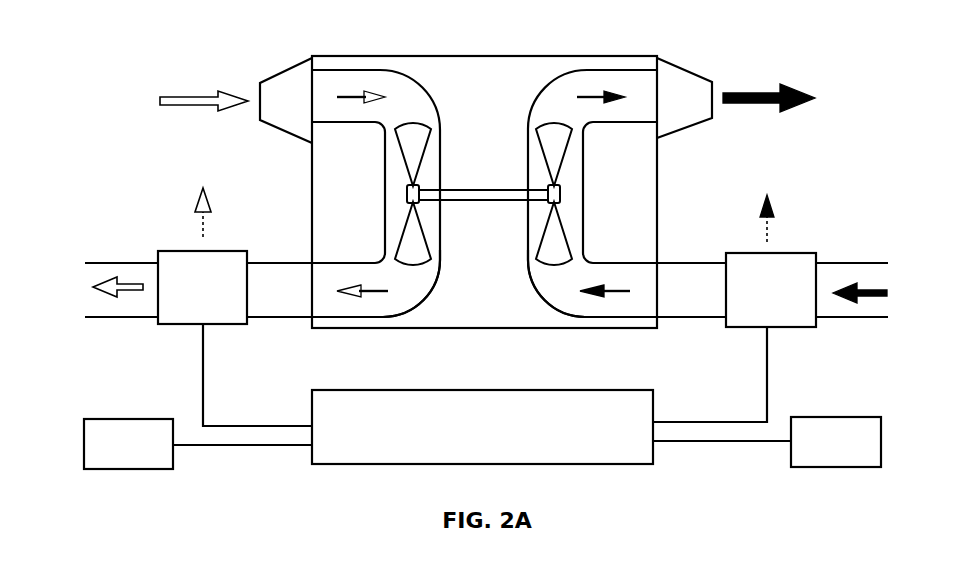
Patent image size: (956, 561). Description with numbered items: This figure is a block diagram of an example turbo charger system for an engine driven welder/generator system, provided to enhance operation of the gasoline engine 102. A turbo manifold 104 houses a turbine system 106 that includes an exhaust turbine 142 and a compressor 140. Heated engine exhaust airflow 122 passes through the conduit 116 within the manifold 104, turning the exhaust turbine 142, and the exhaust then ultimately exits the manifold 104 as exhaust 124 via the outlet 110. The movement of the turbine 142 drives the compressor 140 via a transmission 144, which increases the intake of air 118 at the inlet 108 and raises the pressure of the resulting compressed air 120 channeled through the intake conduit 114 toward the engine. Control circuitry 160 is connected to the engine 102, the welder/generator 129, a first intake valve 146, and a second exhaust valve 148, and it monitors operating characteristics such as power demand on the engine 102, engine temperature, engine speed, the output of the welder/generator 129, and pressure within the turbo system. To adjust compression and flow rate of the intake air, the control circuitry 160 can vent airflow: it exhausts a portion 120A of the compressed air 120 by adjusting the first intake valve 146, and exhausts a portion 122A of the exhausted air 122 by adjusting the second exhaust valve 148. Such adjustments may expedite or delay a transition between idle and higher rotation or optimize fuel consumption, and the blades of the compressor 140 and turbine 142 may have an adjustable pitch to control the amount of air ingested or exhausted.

The gasoline engine 102 is at (198, 444).
The turbo manifold 104 is at (388, 55).
The turbine system 106 is at (466, 128).
The inlet 108 is at (289, 69).
The outlet 110 is at (684, 68).
The intake conduit 114 is at (415, 304).
The conduit 116 is at (555, 304).
The air 118 is at (205, 108).
The compressed air 120 is at (88, 280).
The portion of compressed air 120A is at (186, 204).
The engine exhaust airflow 122 is at (889, 282).
The portion of exhausted air 122A is at (792, 207).
The exhaust 124 is at (763, 104).
The welder/generator 129 is at (767, 442).
The compressor 140 is at (437, 262).
The exhaust turbine 142 is at (540, 247).
The transmission 144 is at (510, 190).
The first intake valve 146 is at (198, 338).
The second exhaust valve 148 is at (770, 337).
The control circuitry 160 is at (482, 427).